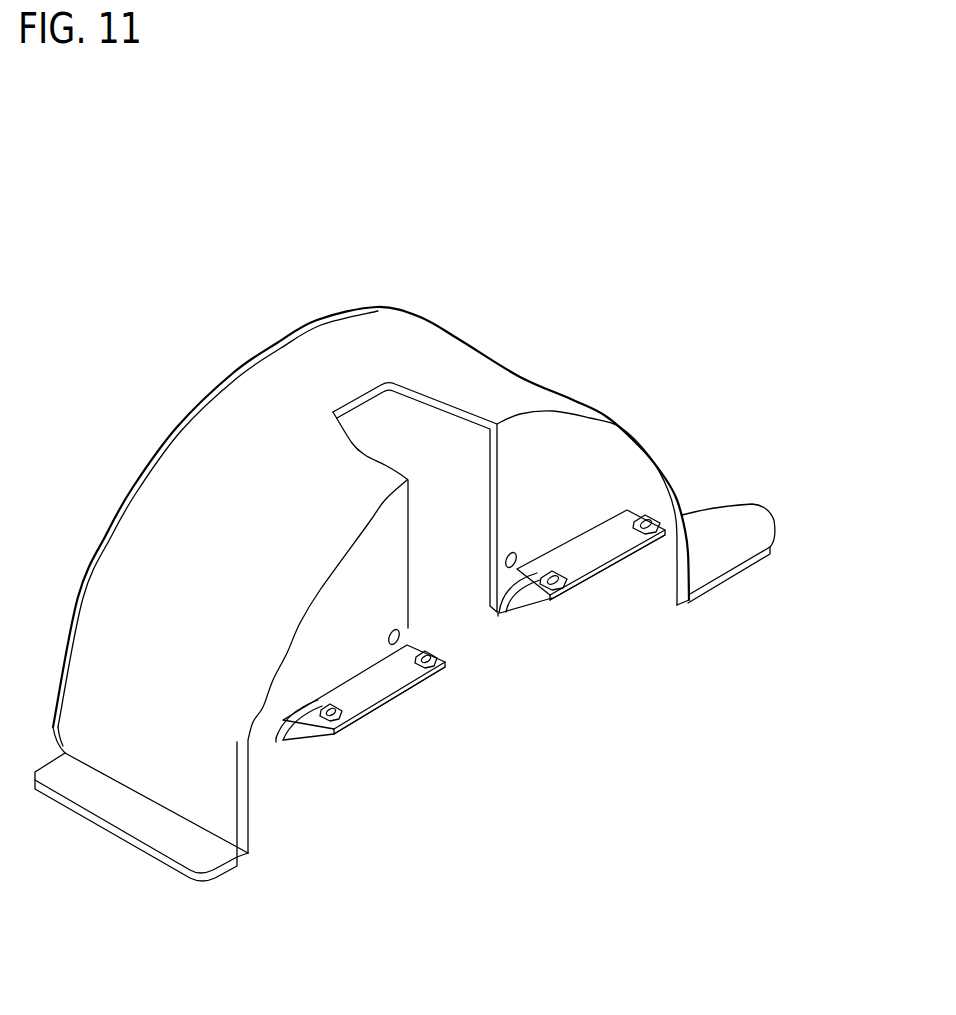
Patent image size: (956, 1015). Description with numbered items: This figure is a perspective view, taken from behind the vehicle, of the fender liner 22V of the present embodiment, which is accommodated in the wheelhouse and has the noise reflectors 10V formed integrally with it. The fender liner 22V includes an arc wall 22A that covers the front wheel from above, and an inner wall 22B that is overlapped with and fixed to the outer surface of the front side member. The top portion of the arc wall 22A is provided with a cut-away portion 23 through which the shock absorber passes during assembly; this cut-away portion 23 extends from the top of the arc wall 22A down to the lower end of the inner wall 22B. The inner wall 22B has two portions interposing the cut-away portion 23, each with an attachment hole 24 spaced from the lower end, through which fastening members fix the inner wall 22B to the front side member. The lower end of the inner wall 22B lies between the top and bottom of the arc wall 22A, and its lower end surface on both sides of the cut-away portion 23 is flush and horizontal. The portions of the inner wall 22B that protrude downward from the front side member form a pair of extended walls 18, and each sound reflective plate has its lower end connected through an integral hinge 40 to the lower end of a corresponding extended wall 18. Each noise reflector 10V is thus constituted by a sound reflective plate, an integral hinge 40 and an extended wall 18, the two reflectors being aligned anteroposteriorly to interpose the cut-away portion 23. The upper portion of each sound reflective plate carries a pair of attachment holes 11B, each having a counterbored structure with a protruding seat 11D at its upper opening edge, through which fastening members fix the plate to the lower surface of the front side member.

The fender liner 22V is at (449, 271).
The arc wall 22A is at (503, 370).
The inner wall 22B is at (617, 473).
The cut-away portion 23 is at (457, 432).
The attachment hole 24 is at (507, 556).
The extended wall 18 is at (493, 608).
The integral hinge 40 is at (498, 614).
The noise reflector 10V is at (392, 706).
The protruding seat 11D is at (637, 520).
The attachment hole 11B is at (357, 713).